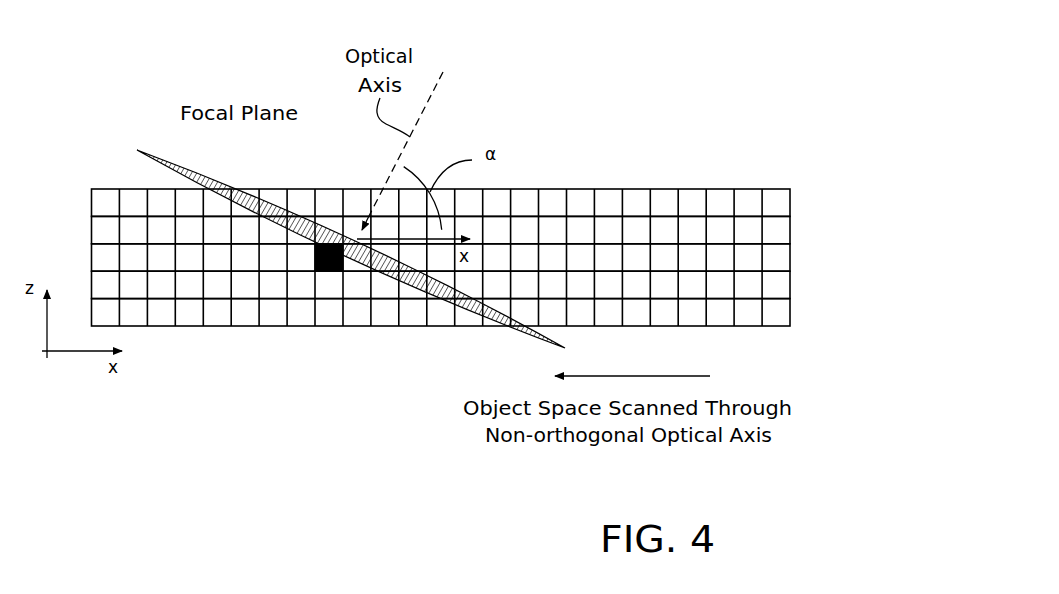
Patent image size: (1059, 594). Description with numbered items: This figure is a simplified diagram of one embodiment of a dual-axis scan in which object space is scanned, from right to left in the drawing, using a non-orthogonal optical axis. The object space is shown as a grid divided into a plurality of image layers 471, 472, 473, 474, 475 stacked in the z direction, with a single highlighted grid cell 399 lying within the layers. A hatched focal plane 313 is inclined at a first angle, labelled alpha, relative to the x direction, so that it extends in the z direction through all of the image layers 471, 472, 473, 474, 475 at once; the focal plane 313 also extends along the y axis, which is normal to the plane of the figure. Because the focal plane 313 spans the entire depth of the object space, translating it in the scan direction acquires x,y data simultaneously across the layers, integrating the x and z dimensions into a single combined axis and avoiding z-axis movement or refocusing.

The focal plane 313 is at (182, 165).
The object space voxel (pixel) 399 is at (313, 272).
The image layer 471 is at (790, 203).
The image layer 472 is at (790, 232).
The image layer 473 is at (790, 262).
The image layer 474 is at (790, 287).
The image layer 475 is at (790, 317).